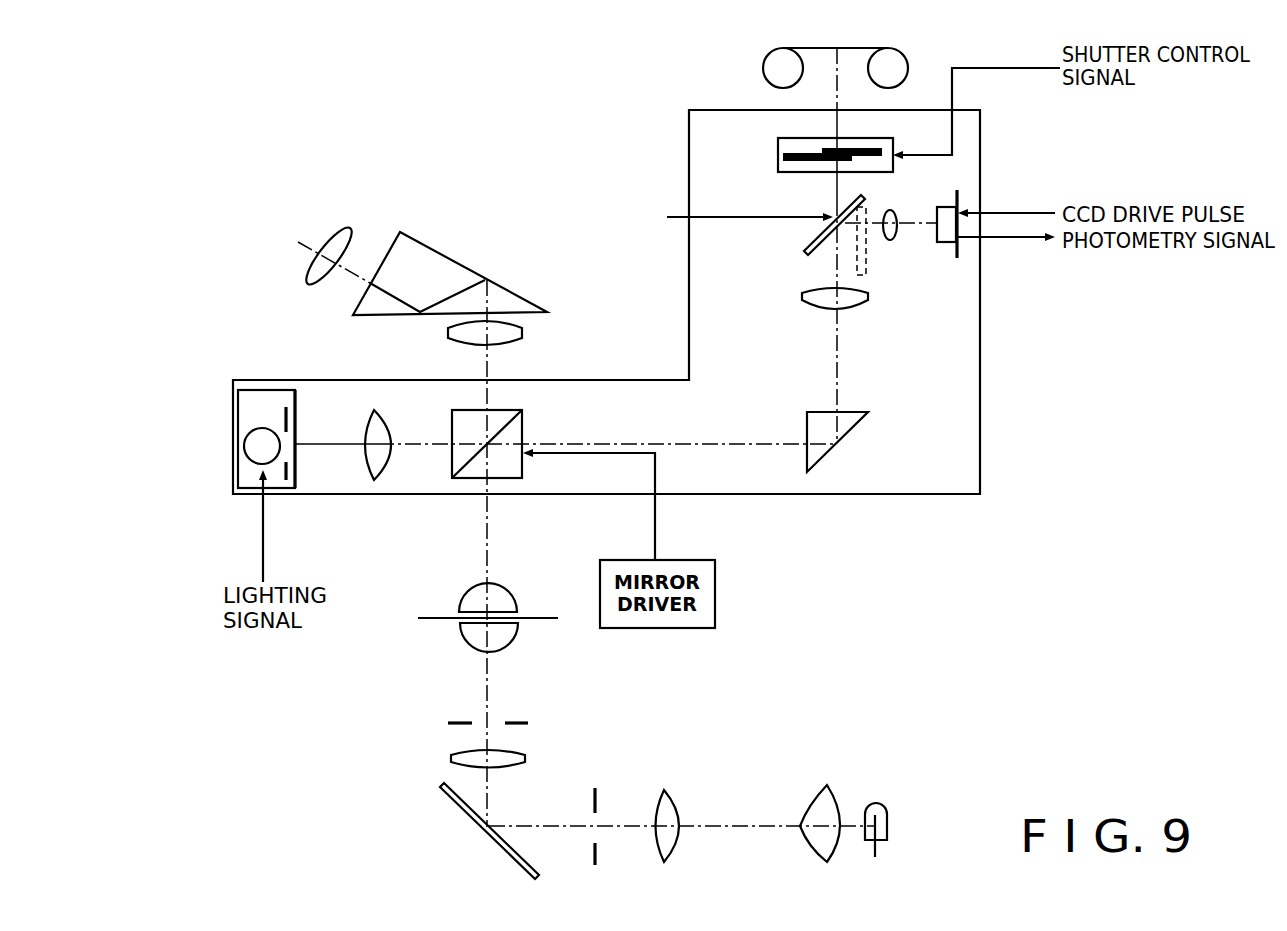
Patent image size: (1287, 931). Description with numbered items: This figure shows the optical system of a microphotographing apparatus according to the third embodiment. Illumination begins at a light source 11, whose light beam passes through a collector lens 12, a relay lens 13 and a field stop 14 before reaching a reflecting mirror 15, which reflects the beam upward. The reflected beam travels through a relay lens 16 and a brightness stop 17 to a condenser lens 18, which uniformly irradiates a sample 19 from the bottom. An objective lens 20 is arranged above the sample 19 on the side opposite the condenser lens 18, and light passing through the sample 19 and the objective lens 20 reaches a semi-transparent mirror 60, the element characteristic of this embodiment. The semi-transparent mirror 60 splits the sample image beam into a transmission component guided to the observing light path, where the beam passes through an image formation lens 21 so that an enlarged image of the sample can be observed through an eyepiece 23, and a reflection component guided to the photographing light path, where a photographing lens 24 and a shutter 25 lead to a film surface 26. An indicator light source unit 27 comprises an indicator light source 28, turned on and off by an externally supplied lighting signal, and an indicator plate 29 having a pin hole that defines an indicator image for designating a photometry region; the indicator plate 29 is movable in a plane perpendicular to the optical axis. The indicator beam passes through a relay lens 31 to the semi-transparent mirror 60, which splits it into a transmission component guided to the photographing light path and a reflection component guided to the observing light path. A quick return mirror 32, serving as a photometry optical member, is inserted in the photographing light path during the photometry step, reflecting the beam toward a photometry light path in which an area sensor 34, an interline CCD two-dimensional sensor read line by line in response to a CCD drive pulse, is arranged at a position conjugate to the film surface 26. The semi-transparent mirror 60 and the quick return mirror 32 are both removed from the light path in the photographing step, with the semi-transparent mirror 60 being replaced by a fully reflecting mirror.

The light source 11 is at (880, 805).
The collector lens 12 is at (822, 798).
The relay lens 13 is at (672, 810).
The field stop 14 is at (592, 802).
The reflecting mirror 15 is at (500, 847).
The relay lens 16 is at (453, 760).
The brightness stop 17 is at (463, 720).
The condenser lens 18 is at (498, 635).
The sample 19 is at (440, 615).
The objective lens 20 is at (500, 605).
The image formation lens 21 is at (510, 335).
The eyepiece 23 is at (317, 282).
The photographing lens 24 is at (863, 305).
The shutter 25 is at (780, 147).
The film surface 26 is at (905, 50).
The indicator light source unit 27 is at (236, 412).
The indicator light source 28 is at (250, 447).
The indicator plate 29 is at (283, 412).
The relay lens 31 is at (372, 423).
The quick return mirror 32 is at (807, 235).
The area sensor 34 is at (943, 236).
The semi-transparent mirror 60 is at (470, 472).